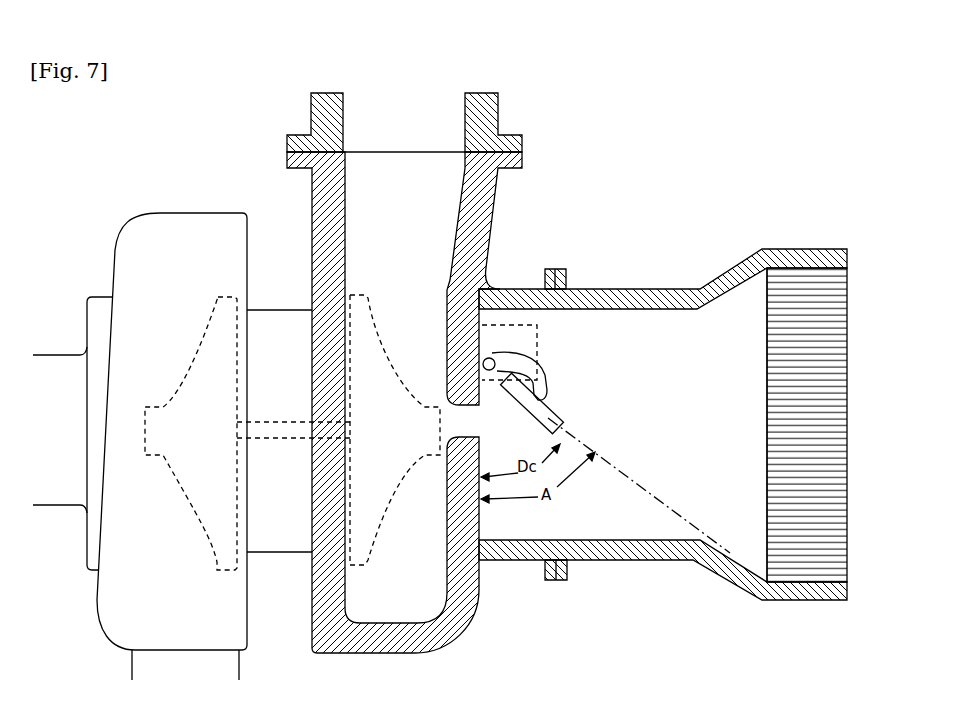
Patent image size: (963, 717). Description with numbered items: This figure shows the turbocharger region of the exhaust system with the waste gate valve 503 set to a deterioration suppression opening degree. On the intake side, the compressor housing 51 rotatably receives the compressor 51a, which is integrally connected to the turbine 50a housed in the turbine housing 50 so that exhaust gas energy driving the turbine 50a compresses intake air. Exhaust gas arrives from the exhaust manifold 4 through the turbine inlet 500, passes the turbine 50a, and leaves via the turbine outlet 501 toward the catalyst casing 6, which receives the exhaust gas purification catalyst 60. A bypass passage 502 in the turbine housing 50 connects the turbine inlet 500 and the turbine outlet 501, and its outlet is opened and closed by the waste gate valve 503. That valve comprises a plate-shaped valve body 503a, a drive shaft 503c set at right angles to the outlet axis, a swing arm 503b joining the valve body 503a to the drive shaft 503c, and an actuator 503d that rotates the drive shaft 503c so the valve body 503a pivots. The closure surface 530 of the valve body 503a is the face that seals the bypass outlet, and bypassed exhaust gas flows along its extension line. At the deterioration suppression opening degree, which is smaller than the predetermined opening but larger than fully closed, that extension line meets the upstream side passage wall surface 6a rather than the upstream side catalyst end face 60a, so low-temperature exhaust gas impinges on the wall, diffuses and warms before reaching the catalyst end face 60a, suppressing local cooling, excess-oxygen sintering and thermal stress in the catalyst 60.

The compressor housing 51 is at (148, 213).
The compressor 51a is at (198, 517).
The exhaust manifold 4 is at (498, 115).
The turbine housing 50 is at (497, 190).
The turbine inlet 500 is at (390, 200).
The turbine 50a is at (380, 530).
The turbine outlet 501 is at (513, 523).
The bypass passage 502 is at (455, 418).
The catalyst casing 6 is at (680, 290).
The upstream side passage wall surface 6a is at (622, 544).
The exhaust gas purification catalyst 60 is at (815, 555).
The upstream side catalyst end face 60a is at (767, 442).
The waste gate valve 503 is at (558, 347).
The valve body 503a is at (562, 410).
The swing arm 503b is at (545, 378).
The drive shaft 503c is at (487, 357).
The actuator 503d is at (498, 323).
The closure surface 530 is at (533, 410).